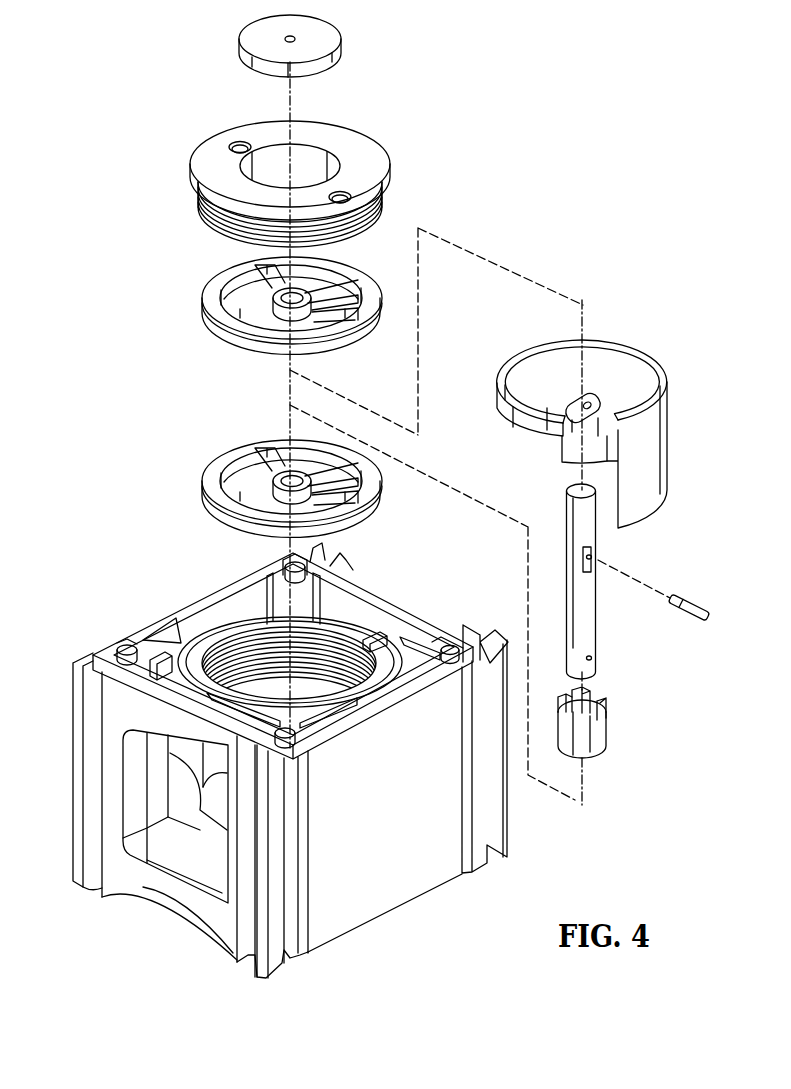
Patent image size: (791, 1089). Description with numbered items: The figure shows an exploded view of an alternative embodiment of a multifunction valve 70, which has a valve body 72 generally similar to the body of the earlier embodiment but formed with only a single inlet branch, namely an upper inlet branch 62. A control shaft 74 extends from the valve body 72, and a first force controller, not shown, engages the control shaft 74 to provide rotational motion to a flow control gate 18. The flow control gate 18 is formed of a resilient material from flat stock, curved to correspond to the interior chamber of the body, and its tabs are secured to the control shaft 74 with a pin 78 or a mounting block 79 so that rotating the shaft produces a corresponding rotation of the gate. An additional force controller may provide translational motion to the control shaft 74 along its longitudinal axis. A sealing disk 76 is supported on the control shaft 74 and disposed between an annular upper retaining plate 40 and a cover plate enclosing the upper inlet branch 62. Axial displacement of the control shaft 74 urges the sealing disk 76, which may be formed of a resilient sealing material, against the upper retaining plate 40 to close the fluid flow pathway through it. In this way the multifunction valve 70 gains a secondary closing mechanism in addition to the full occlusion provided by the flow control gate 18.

The flow control gate 18 is at (637, 365).
The upper retaining plate 40 is at (203, 187).
The upper inlet branch 62 is at (337, 643).
The multifunction valve 70 is at (288, 750).
The valve body 72 is at (200, 603).
The control shaft 74 is at (588, 605).
The sealing disk 76 is at (340, 57).
The pin 78 is at (690, 603).
The mounting block 79 is at (607, 738).